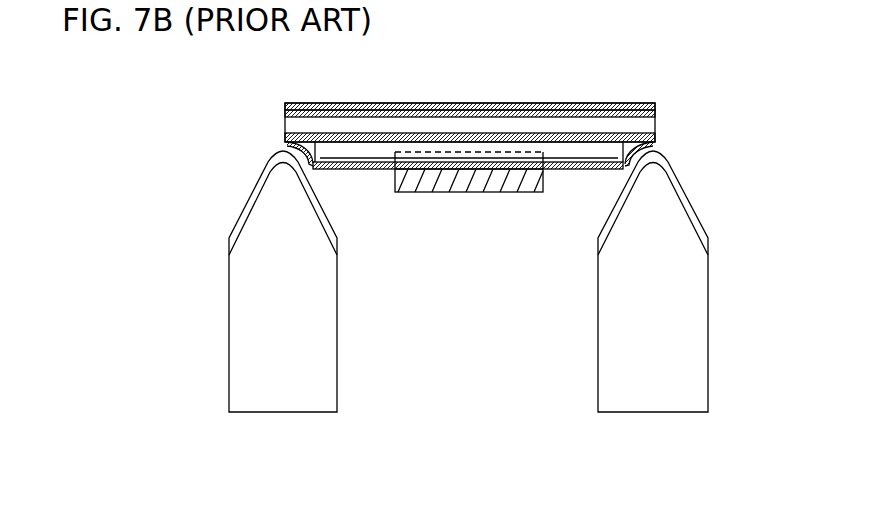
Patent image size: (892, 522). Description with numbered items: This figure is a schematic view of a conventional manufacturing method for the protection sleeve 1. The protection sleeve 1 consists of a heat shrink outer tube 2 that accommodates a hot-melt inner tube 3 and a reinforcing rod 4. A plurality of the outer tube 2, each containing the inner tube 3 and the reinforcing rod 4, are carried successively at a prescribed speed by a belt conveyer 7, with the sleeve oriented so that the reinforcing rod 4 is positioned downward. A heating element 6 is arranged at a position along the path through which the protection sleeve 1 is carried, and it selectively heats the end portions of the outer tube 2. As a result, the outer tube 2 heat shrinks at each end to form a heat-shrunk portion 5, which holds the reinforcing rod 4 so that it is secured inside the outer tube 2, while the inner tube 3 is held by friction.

The protection sleeve 1 is at (319, 100).
The heat shrink outer tube 2 is at (652, 104).
The hot-melt inner tube 3 is at (658, 124).
The reinforcing rod 4 is at (592, 153).
The heat-shrunk portion 5 is at (652, 151).
The heating element 6 is at (704, 213).
The belt conveyer 7 is at (490, 193).